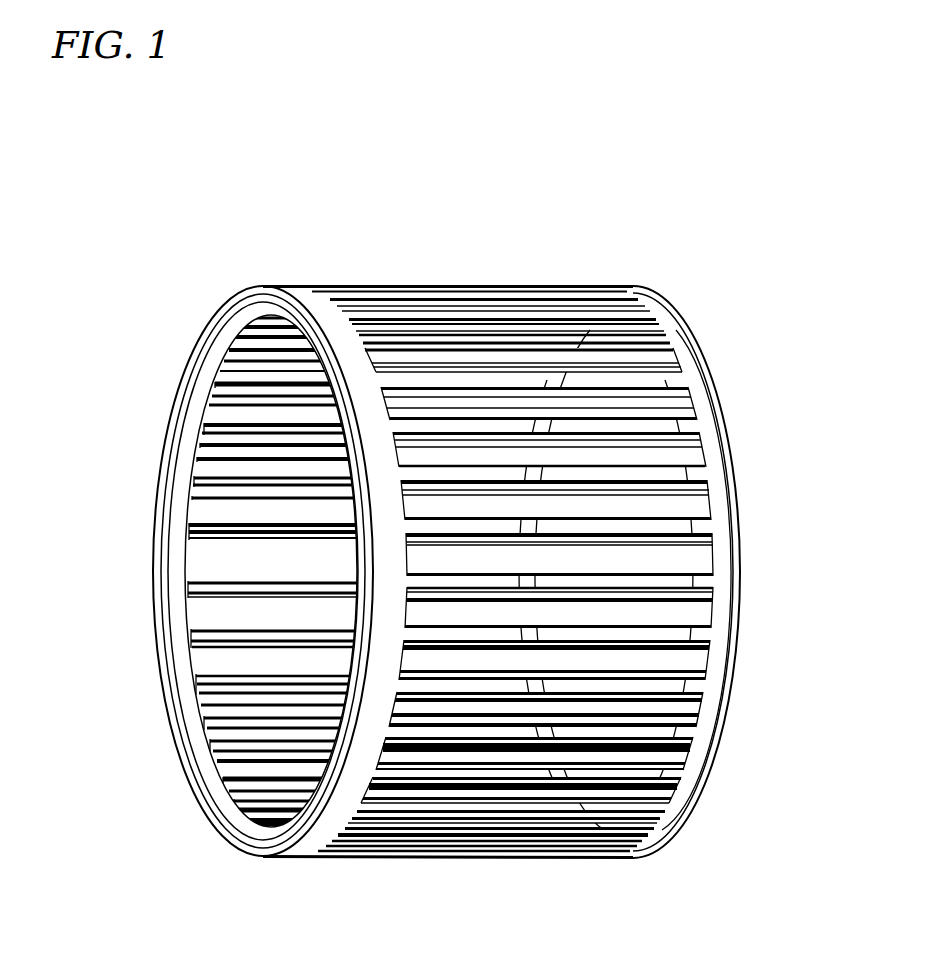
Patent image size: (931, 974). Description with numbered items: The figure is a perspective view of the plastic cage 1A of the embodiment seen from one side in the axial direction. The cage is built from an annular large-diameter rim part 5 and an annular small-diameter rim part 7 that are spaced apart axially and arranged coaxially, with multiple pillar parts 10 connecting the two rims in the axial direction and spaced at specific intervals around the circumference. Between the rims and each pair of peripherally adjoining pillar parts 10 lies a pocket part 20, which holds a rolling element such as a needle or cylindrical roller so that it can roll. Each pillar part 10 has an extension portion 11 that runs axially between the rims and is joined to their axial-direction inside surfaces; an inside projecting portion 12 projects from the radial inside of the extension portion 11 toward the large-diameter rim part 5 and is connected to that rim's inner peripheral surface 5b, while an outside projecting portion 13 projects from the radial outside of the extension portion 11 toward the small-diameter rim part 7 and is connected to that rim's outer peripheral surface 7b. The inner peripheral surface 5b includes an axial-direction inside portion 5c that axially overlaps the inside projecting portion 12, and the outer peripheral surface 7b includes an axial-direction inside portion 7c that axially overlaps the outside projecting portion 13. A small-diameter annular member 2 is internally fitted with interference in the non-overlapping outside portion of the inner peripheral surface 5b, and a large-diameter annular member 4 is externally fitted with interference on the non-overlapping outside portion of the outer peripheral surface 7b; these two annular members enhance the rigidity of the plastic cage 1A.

The plastic cage 1A is at (446, 504).
The small-diameter annular member 2 is at (210, 772).
The large-diameter annular member 4 is at (175, 633).
The large-diameter rim part 5 is at (372, 709).
The inner peripheral surface 5b is at (195, 512).
The axial-direction inside portion 5c is at (200, 463).
The small-diameter rim part 7 is at (526, 507).
The outer peripheral surface 7b is at (682, 745).
The axial-direction inside portion 7c is at (690, 705).
The pillar part 10 is at (680, 582).
The extension portion 11 is at (277, 587).
The inside projecting portion 12 is at (195, 587).
The outside projecting portion 13 is at (703, 474).
The pocket part 20 is at (651, 540).